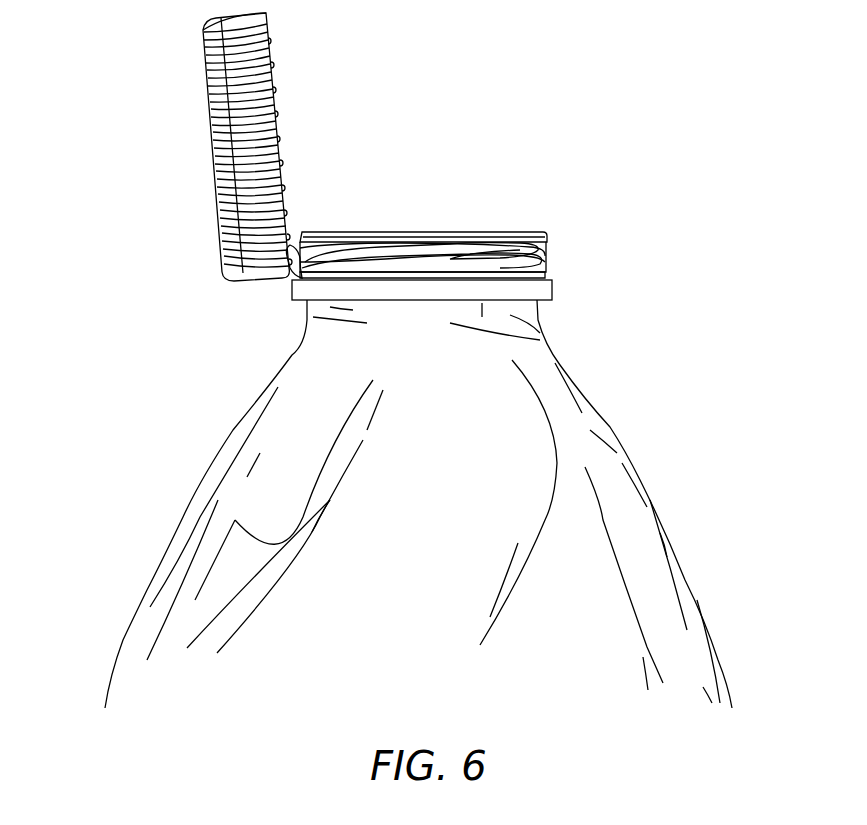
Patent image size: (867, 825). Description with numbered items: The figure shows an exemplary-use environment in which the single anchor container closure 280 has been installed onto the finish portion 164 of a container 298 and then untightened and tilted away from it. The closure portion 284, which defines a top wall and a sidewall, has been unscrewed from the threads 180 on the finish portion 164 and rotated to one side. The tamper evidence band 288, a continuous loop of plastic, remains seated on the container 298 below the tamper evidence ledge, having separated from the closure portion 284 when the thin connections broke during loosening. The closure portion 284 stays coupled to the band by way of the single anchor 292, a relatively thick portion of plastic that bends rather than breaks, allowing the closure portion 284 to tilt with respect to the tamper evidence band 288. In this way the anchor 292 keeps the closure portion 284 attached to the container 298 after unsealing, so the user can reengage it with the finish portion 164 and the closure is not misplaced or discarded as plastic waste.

The single anchor container closure 280 is at (182, 152).
The closure portion 284 is at (206, 42).
The finish portion 164 is at (565, 239).
The threads 180 is at (453, 250).
The tamper evidence band 288 is at (553, 290).
The anchor 292 is at (283, 290).
The container 298 is at (608, 427).